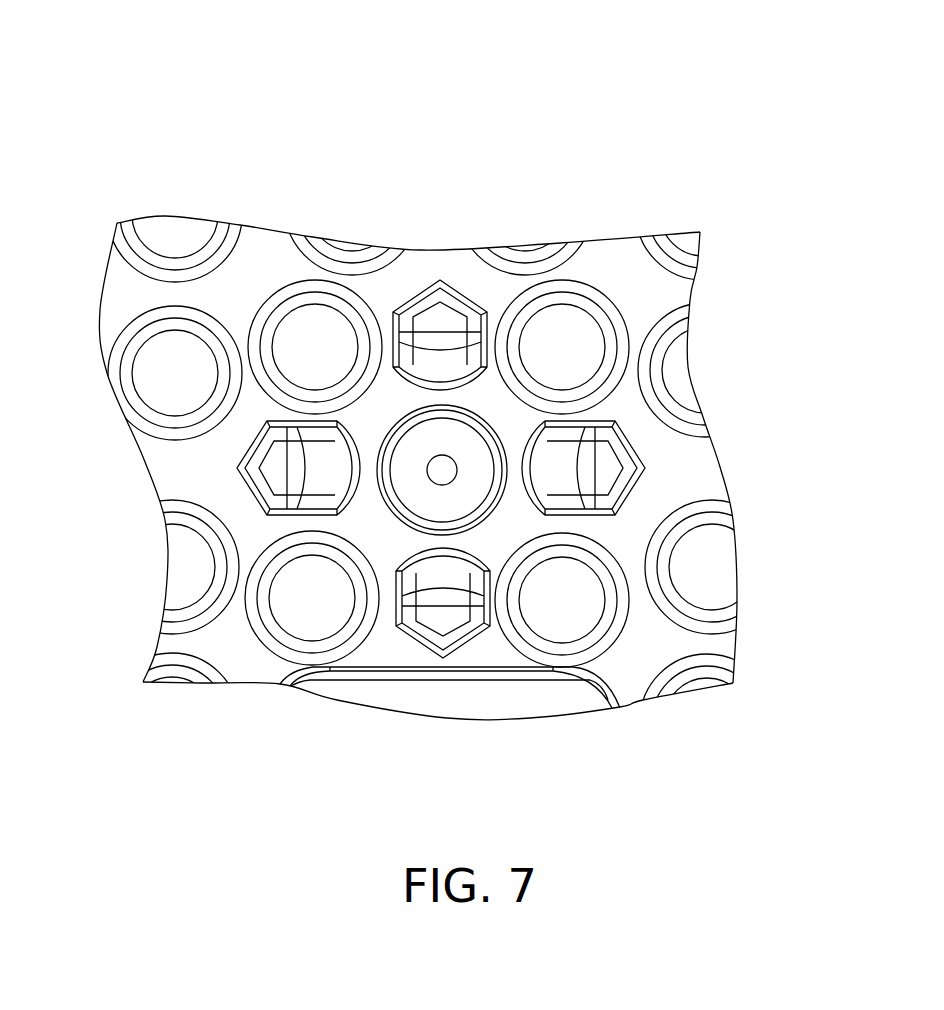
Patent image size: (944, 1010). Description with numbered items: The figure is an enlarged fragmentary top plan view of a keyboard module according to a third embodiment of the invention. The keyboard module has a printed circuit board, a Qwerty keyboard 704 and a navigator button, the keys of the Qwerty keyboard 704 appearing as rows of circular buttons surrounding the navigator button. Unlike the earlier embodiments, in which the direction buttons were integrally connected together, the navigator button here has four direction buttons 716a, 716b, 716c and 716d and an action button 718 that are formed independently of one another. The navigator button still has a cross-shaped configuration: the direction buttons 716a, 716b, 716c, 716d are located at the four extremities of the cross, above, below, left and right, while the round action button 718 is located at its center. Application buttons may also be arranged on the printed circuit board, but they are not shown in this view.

The Qwerty keyboard 704 is at (173, 373).
The action button 718 is at (467, 445).
The direction button 716a is at (437, 317).
The direction button 716b is at (443, 625).
The direction button 716c is at (263, 472).
The direction button 716d is at (610, 475).